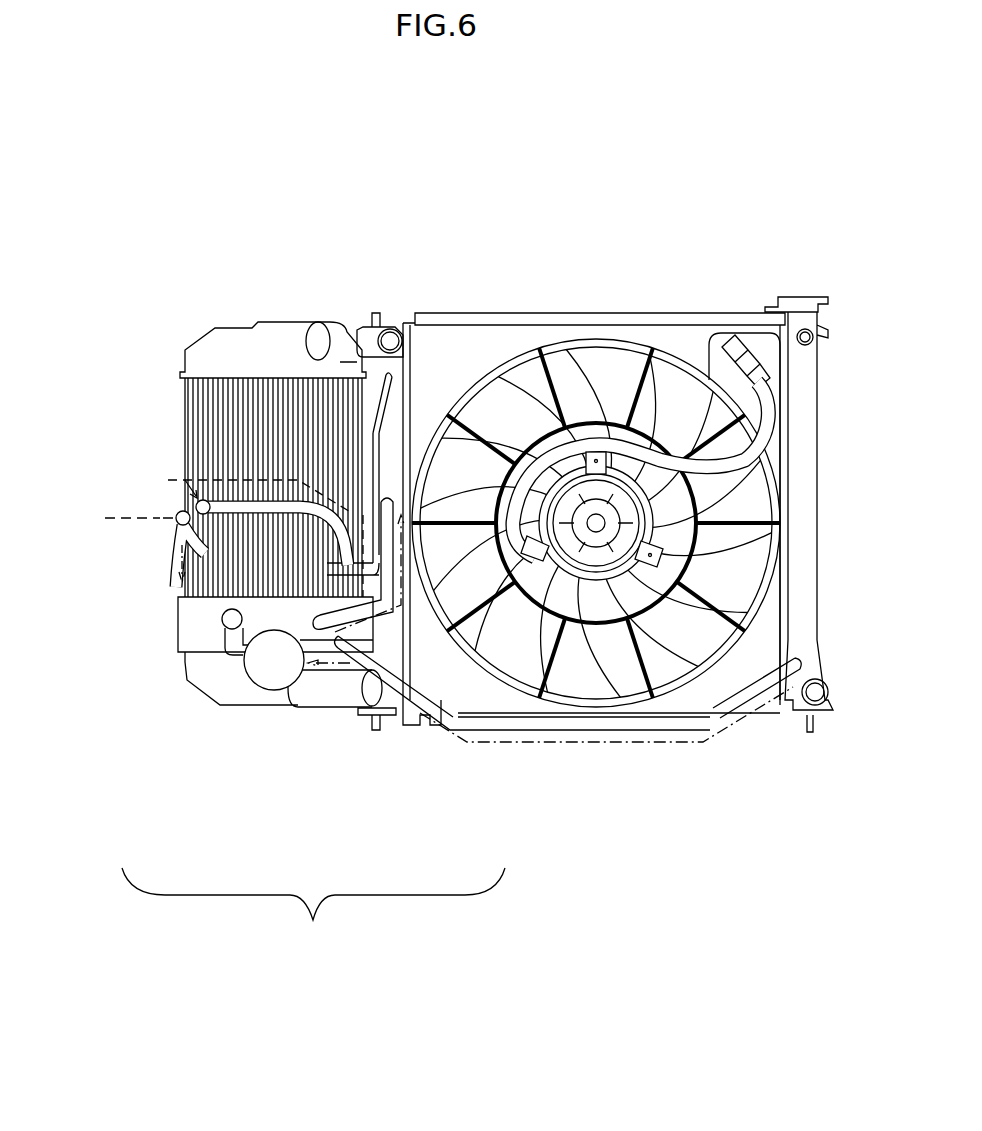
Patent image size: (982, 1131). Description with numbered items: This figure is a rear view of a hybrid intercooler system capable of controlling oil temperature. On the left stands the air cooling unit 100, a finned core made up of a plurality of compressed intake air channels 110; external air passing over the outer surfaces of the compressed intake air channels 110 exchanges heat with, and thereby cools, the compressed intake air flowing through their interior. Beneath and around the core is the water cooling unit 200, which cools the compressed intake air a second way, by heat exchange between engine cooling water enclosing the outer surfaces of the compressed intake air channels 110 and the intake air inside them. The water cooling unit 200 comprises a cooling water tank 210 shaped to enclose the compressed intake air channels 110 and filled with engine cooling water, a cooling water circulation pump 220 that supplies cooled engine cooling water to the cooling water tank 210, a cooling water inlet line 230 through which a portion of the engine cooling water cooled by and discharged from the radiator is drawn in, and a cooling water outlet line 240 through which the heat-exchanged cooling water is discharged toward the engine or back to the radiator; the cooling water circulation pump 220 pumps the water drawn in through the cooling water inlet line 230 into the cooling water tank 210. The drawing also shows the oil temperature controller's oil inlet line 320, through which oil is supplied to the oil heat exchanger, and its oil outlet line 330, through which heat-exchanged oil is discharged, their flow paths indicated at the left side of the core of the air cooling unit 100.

The air cooling unit 100 is at (253, 395).
The compressed intake air channels 110 is at (290, 405).
The water cooling unit 200 is at (313, 910).
The cooling water tank 210 is at (207, 633).
The cooling water circulation pump 220 is at (274, 672).
The cooling water inlet line 230 is at (598, 722).
The cooling water outlet line 240 is at (438, 712).
The oil inlet line 320 is at (177, 522).
The oil outlet line 330 is at (112, 603).